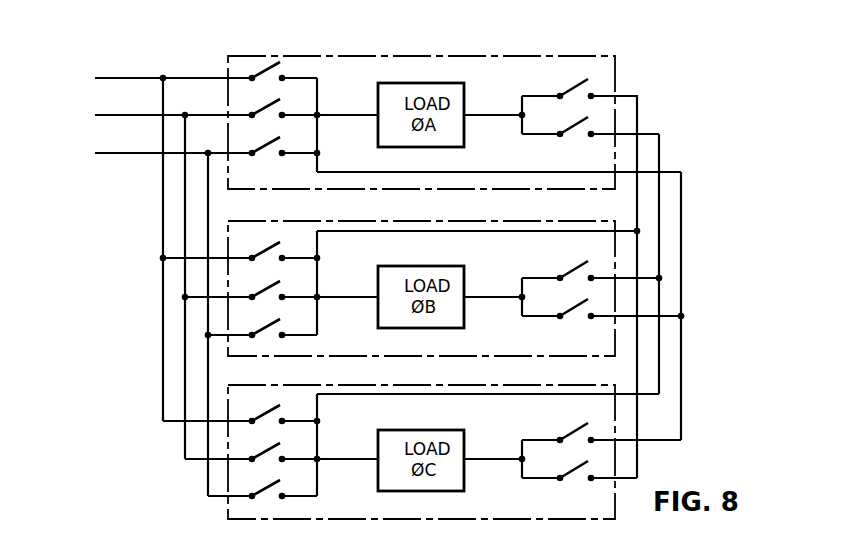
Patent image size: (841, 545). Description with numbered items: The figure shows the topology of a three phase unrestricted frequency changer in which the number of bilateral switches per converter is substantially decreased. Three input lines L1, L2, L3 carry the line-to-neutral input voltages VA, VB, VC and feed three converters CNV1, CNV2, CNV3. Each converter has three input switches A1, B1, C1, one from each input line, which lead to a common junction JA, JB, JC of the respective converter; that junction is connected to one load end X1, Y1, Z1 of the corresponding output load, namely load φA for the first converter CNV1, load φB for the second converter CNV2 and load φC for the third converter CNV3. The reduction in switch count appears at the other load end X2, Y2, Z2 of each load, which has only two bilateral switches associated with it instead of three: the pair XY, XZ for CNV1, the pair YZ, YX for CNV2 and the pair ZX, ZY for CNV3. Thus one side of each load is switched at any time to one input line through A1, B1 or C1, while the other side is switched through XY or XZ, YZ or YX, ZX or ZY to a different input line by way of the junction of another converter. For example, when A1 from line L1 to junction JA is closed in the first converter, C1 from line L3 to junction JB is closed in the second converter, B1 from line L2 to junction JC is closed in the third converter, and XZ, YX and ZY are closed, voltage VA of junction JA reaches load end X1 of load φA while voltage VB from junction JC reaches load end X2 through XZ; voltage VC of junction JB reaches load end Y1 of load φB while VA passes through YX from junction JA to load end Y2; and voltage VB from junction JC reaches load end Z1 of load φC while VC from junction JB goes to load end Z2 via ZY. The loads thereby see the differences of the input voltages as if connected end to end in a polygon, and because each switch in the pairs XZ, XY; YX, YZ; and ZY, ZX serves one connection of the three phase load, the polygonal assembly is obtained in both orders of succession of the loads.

The line-to-neutral input voltage of phase A VA is at (161, 79).
The line-to-neutral input voltage of phase B VB is at (161, 116).
The line-to-neutral input voltage of phase C VC is at (161, 154).
The first input line L1 is at (113, 50).
The second input line L2 is at (113, 87).
The third input line L3 is at (113, 125).
The input bilateral switch A1 is at (263, 72).
The input bilateral switch B1 is at (263, 109).
The input bilateral switch C1 is at (263, 147).
The junction of the first converter JA is at (320, 112).
The junction of the second converter JB is at (320, 294).
The junction of the third converter JC is at (320, 456).
The first end of load φA X1 is at (347, 105).
The second end of load φA X2 is at (494, 106).
The first end of load φB Y1 is at (347, 287).
The second end of load φB Y2 is at (494, 288).
The first end of load φC Z1 is at (347, 449).
The second end of load φC Z2 is at (494, 450).
The output bilateral switch of CNV1 XY is at (577, 85).
The output bilateral switch of CNV1 XZ is at (577, 123).
The output bilateral switch of CNV2 YZ is at (577, 267).
The output bilateral switch of CNV2 YX is at (577, 306).
The output bilateral switch of CNV3 ZX is at (577, 429).
The output bilateral switch of CNV3 ZY is at (577, 468).
The first converter CNV1 is at (687, 67).
The second converter CNV2 is at (742, 254).
The third converter CNV3 is at (735, 414).